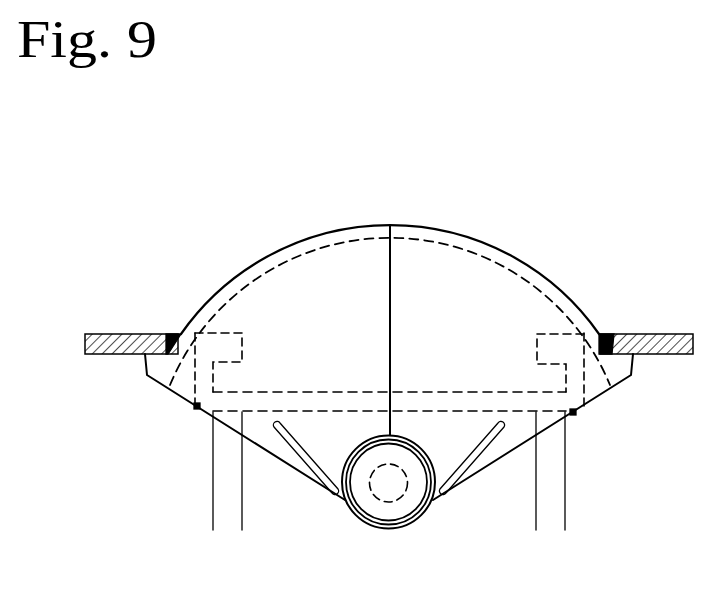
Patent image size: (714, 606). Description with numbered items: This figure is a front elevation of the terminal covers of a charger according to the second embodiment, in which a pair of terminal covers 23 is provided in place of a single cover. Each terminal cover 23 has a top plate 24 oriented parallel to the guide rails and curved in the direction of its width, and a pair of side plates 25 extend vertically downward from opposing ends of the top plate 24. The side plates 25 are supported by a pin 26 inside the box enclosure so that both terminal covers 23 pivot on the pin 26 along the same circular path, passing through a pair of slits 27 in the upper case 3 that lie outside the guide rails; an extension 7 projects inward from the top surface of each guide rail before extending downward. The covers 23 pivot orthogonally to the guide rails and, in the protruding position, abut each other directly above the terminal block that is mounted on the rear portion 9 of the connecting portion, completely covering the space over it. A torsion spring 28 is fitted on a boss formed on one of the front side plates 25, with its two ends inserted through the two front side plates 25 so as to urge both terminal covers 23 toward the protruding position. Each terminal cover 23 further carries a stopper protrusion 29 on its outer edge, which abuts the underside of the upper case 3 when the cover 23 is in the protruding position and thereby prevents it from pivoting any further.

The upper case 3 is at (662, 334).
The extension 7 is at (227, 332).
The rear portion 9 is at (415, 392).
The terminal cover 23 is at (338, 222).
The top plate 24 is at (295, 245).
The side plate 25 is at (253, 300).
The pin 26 is at (391, 492).
The slit 27 is at (165, 333).
The torsion spring 28 is at (430, 508).
The stopper protrusion 29 is at (155, 366).